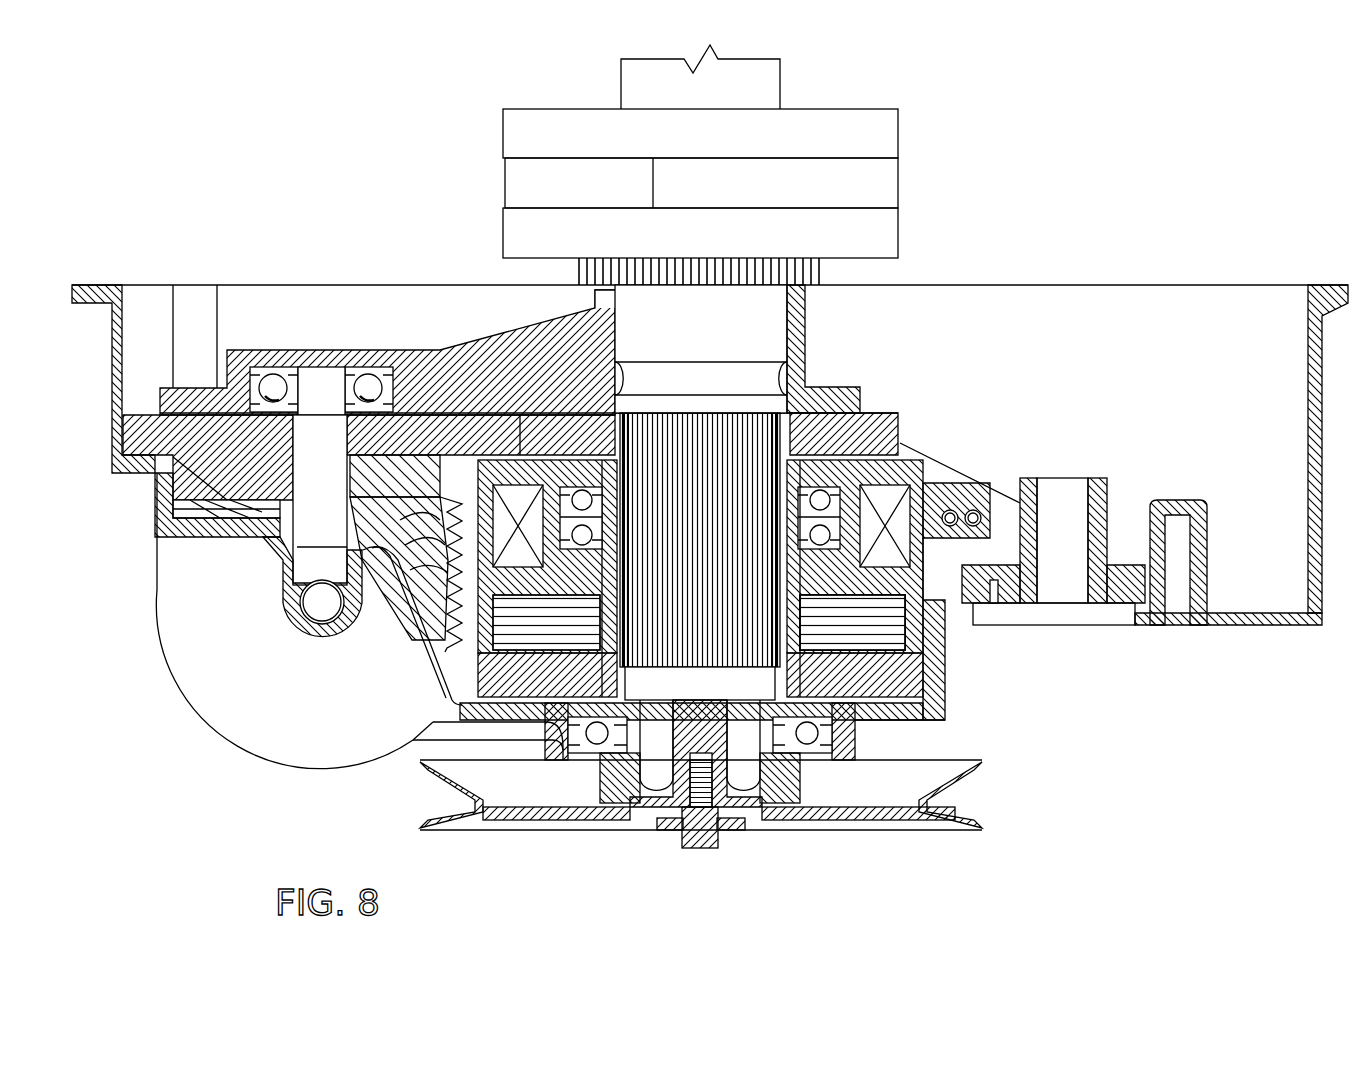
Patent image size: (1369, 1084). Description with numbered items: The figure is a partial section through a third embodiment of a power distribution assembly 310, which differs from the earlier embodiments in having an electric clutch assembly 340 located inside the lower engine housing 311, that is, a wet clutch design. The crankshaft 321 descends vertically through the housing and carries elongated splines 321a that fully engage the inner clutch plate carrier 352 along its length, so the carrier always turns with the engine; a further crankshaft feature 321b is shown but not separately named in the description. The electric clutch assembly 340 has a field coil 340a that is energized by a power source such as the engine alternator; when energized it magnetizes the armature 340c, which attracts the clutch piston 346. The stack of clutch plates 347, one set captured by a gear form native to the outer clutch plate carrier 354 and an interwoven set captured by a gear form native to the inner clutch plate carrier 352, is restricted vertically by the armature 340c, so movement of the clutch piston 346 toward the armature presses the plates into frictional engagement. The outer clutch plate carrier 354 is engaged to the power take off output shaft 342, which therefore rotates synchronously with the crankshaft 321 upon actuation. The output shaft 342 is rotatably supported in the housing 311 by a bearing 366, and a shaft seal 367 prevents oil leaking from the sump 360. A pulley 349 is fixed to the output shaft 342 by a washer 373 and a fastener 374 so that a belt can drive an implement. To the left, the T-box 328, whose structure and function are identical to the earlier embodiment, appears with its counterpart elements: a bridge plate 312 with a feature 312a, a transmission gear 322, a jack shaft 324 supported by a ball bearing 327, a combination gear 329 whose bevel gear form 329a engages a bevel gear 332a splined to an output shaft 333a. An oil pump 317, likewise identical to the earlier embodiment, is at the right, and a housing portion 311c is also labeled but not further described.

The power distribution assembly 310 is at (240, 182).
The lower engine housing 311 is at (341, 716).
The housing bracket 311c is at (947, 470).
The hub 312 is at (446, 350).
The hub collar 312a is at (612, 313).
The oil pump 317 is at (1091, 649).
The crankshaft 321 is at (722, 319).
The splines 321a is at (726, 442).
The shaft groove 321b is at (648, 382).
The mounting plate 322 is at (862, 428).
The input shaft 324 is at (341, 465).
The bearings 327 is at (273, 382).
The T-box 328 is at (243, 768).
The support plate 329 is at (137, 440).
The roller bearing 329a is at (262, 500).
The bevel gear 332a is at (432, 565).
The pin 333a is at (318, 604).
The electric clutch assembly 340 is at (972, 710).
The field coil 340a is at (887, 497).
The armature 340c is at (932, 586).
The power take off output shaft 342 is at (645, 800).
The clutch piston 346 is at (905, 652).
The clutch plates 347 is at (903, 630).
The pulley 349 is at (958, 828).
The inner clutch plate carrier 352 is at (840, 738).
The outer clutch plate carrier 354 is at (897, 692).
The sump 360 is at (1249, 600).
The bearing 366 is at (597, 735).
The shaft seal 367 is at (786, 780).
The washer 373 is at (726, 810).
The fastener 374 is at (694, 850).